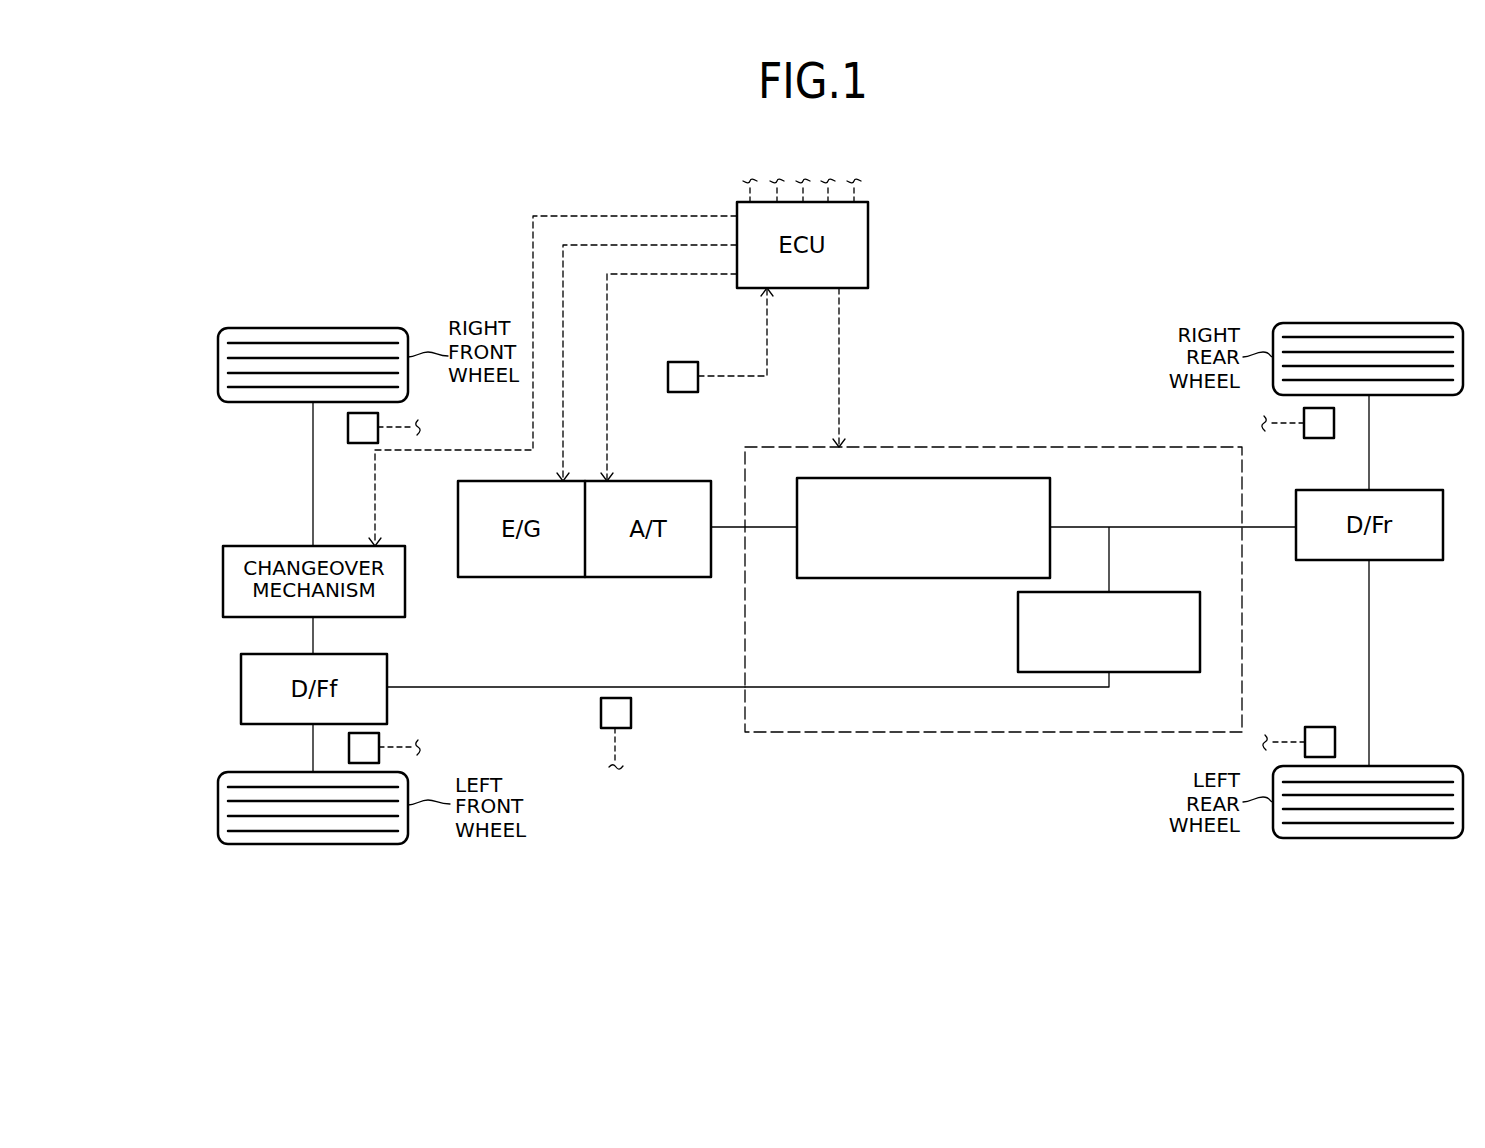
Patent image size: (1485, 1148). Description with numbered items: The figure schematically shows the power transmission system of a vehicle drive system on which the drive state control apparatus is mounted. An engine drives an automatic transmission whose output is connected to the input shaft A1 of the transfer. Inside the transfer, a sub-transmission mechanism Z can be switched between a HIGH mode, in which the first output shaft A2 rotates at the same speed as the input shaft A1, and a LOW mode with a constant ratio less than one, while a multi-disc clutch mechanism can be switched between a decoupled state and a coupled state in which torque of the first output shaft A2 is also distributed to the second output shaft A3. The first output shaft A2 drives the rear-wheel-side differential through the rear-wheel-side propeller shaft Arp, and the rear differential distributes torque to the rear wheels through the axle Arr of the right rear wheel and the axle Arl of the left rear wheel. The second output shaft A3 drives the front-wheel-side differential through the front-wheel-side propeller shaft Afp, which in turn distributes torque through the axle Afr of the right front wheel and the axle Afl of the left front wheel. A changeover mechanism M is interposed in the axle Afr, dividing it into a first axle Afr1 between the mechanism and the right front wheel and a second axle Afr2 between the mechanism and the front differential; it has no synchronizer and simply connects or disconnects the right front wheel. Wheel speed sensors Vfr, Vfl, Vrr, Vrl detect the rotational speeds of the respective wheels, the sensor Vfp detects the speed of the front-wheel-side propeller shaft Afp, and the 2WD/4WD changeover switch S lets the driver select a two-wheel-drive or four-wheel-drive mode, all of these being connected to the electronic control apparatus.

The wheel speed sensor Vfr is at (378, 418).
The wheel speed sensor Vfl is at (379, 738).
The front-wheel-side propeller shaft rotational speed sensor Vfp is at (631, 712).
The wheel speed sensor Vrr is at (1319, 438).
The wheel speed sensor Vrl is at (1321, 727).
The 2WD/4WD changeover switch S is at (682, 392).
The changeover mechanism M is at (341, 546).
The axle of the right front wheel Afr is at (211, 528).
The first axle Afr1 is at (313, 470).
The second axle Afr2 is at (313, 637).
The axle of the left front wheel Afl is at (313, 749).
The front-wheel-side propeller shaft Afp is at (496, 687).
The input shaft A1 is at (764, 527).
The first output shaft A2 is at (1194, 527).
The second output shaft A3 is at (809, 687).
The sub-transmission mechanism Z is at (900, 578).
The rear-wheel-side propeller shaft Arp is at (1270, 527).
The axle of the right rear wheel Arr is at (1369, 445).
The axle of the left rear wheel Arl is at (1369, 663).